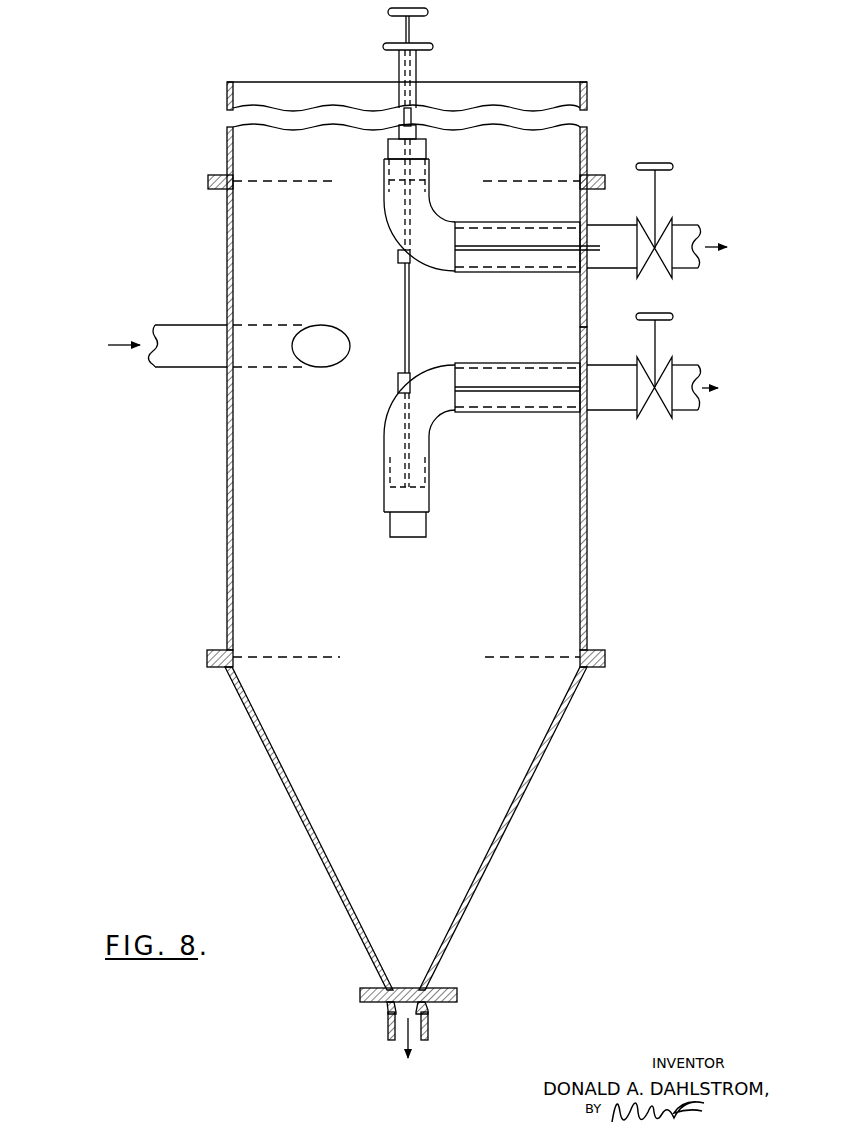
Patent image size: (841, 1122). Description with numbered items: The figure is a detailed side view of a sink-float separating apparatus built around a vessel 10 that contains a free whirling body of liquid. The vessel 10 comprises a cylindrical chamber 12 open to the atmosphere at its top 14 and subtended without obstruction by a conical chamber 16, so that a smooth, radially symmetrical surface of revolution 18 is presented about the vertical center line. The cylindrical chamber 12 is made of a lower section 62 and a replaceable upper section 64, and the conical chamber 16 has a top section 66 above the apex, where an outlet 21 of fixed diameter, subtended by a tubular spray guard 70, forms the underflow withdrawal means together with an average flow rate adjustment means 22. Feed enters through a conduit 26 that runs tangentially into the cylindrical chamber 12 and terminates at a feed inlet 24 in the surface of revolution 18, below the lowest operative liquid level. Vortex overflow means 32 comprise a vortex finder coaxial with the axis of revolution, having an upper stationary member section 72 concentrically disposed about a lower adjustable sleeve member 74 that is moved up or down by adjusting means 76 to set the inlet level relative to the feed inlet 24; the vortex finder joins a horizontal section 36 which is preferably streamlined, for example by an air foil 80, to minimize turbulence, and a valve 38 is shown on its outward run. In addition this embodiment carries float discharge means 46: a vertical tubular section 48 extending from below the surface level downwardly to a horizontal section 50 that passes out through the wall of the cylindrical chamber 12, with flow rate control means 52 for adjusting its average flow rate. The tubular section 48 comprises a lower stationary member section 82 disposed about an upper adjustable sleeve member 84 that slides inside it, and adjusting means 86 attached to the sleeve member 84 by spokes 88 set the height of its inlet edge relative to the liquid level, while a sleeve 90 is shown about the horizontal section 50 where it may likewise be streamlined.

The vessel 10 is at (590, 592).
The cylindrical chamber 12 is at (587, 540).
The top 14 is at (548, 82).
The conical chamber 16 is at (527, 805).
The surface of revolution 18 is at (562, 692).
The outlet 21 is at (420, 990).
The average flow rate adjustment means 22 is at (430, 1010).
The feed inlet 24 is at (333, 360).
The conduit 26 is at (200, 367).
The vortex overflow means 32 is at (447, 347).
The horizontal section 36 is at (607, 412).
The intermediate outlet valve 38 is at (655, 365).
The float discharge means 46 is at (434, 276).
The tubular section 48 is at (430, 180).
The horizontal section 50 is at (548, 250).
The flow rate control means 52 is at (655, 222).
The lower section 62 is at (587, 500).
The upper section 64 is at (587, 158).
The top section 66 is at (492, 872).
The tubular spray guard 70 is at (428, 1030).
The upper stationary member section 72 is at (384, 443).
The adjustable sleeve member 74 is at (392, 523).
The adjusting means 76 is at (410, 27).
The air foil 80 is at (512, 363).
The lower stationary member section 82 is at (384, 200).
The adjustable sleeve member 84 is at (388, 150).
The adjusting means 86 is at (398, 66).
The spokes 88 is at (418, 155).
The fine solids outlet sleeve 90 is at (485, 222).